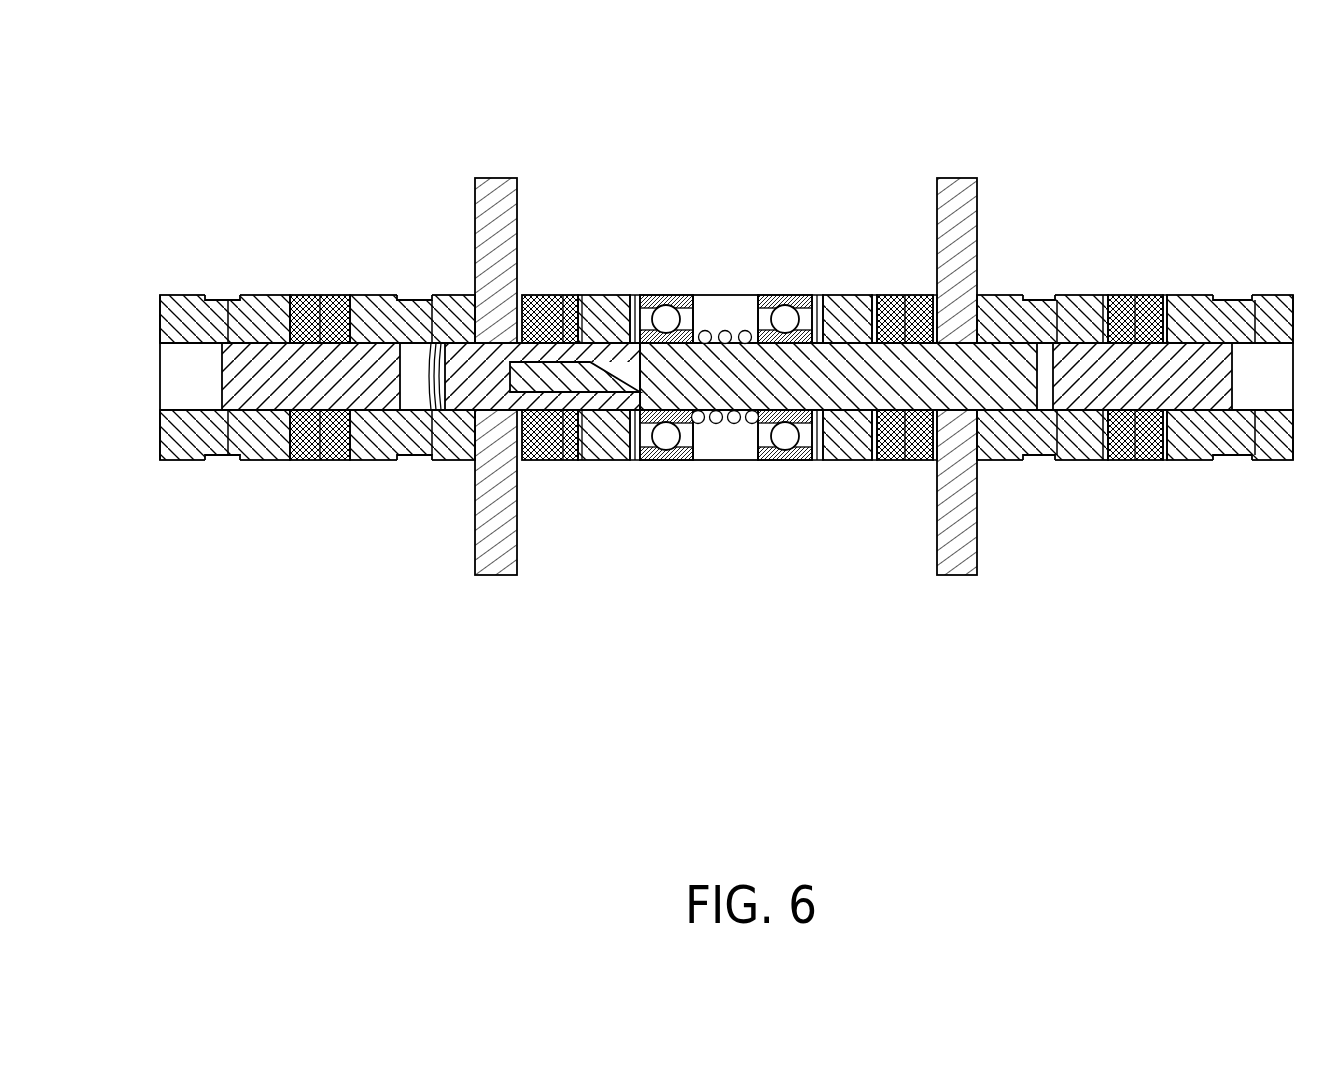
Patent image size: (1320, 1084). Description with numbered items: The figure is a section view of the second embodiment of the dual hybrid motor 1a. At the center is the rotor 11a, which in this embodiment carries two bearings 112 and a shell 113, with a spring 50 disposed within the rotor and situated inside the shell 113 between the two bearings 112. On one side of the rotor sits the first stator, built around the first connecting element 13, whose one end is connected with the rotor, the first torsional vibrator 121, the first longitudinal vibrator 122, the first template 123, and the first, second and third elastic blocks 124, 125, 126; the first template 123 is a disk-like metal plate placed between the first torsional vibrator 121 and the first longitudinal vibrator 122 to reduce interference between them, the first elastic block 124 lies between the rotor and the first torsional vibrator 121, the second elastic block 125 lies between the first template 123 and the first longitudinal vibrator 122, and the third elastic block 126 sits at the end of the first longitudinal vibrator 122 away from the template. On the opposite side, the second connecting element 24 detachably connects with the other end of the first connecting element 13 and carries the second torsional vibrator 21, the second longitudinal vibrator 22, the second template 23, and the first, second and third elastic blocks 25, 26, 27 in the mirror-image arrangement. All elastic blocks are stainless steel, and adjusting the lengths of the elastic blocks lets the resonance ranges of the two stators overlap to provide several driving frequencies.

The dual hybrid motor 1a is at (171, 169).
The rotor 11a is at (727, 305).
The bearing 112 is at (665, 312).
The shell 113 is at (727, 300).
The first torsional vibrator 121 is at (912, 462).
The first longitudinal vibrator 122 is at (1137, 462).
The first template 123 is at (952, 565).
The first elastic block 124 is at (850, 310).
The second elastic block 125 is at (1085, 315).
The third elastic block 126 is at (1265, 320).
The first connecting element 13 is at (838, 380).
The second torsional vibrator 21 is at (560, 298).
The second longitudinal vibrator 22 is at (320, 462).
The second template 23 is at (497, 558).
The second connecting element 24 is at (560, 462).
The first elastic block 25 is at (605, 462).
The second elastic block 26 is at (412, 298).
The third elastic block 27 is at (228, 297).
The spring 50 is at (735, 440).